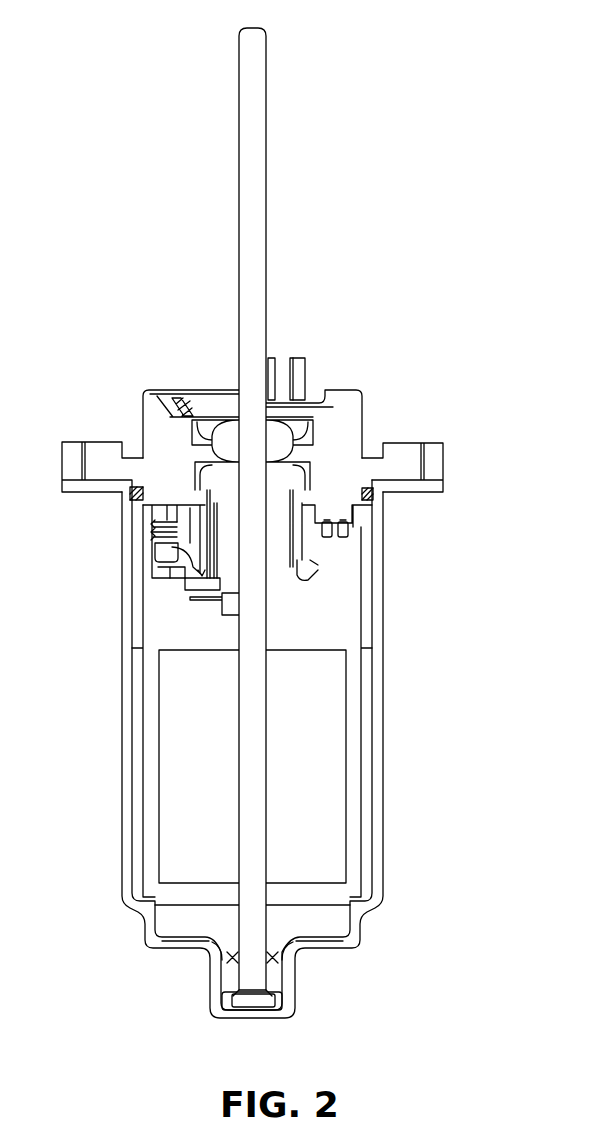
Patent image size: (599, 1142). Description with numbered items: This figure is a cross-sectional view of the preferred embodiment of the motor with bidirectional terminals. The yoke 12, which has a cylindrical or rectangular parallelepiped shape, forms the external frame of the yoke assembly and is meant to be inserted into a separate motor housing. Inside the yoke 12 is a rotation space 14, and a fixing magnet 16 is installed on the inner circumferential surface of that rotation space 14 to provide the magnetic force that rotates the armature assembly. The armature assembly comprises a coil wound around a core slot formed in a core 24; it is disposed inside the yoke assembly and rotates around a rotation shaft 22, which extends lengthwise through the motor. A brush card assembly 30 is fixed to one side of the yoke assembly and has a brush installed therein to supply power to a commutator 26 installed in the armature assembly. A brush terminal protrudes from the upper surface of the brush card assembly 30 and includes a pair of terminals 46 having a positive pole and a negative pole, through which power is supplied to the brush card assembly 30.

The yoke 12 is at (383, 752).
The rotation space 14 is at (338, 633).
The fixing magnet 16 is at (365, 855).
The rotation shaft 22 is at (255, 203).
The core 24 is at (346, 693).
The commutator 26 is at (270, 540).
The brush card assembly 30 is at (352, 423).
The terminals 46 is at (299, 372).